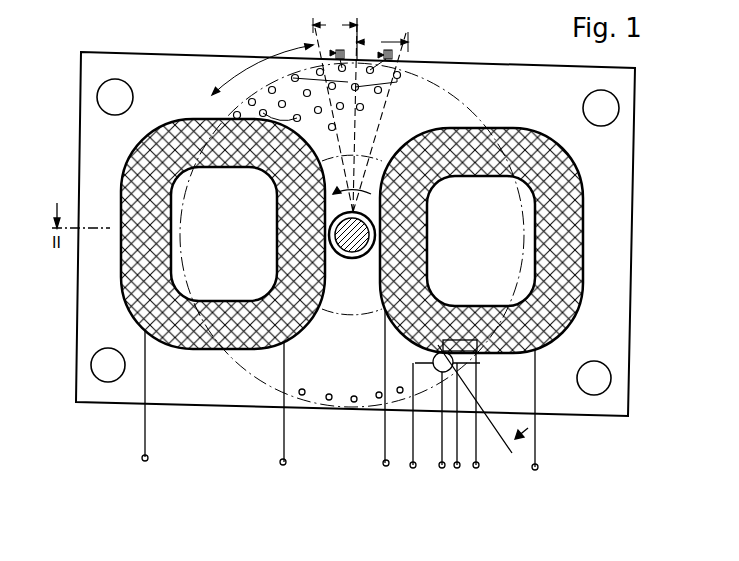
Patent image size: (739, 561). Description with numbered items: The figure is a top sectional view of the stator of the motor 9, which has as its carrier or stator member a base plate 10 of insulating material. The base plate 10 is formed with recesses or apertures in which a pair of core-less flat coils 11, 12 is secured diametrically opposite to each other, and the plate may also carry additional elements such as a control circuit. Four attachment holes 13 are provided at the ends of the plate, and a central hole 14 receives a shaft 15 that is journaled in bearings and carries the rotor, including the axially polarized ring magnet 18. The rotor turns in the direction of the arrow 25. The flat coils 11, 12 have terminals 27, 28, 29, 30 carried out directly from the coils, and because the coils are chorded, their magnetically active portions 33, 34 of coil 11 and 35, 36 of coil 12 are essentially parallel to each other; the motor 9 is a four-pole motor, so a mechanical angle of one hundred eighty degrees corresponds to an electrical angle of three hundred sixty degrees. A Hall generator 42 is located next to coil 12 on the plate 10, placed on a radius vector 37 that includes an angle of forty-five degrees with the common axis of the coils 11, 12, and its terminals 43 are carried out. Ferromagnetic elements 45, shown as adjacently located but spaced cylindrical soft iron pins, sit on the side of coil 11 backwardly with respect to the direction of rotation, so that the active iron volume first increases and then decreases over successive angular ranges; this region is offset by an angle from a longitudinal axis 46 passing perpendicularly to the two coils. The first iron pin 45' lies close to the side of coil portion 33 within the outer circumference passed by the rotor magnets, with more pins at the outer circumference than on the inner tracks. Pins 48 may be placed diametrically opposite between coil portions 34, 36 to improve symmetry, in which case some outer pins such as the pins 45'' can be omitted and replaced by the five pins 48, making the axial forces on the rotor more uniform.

The motor 9 is at (172, 43).
The base plate 10 is at (507, 72).
The flat coil 11 is at (128, 277).
The flat coil 12 is at (580, 304).
The attachment holes 13 is at (115, 88).
The central hole 14 is at (358, 258).
The shaft 15 is at (346, 252).
The ring magnet 18 is at (272, 387).
The arrow indicating direction of rotation 25 is at (360, 117).
The coil terminal 27 is at (142, 458).
The coil terminal 28 is at (293, 406).
The coil terminal 29 is at (383, 463).
The coil terminal 30 is at (538, 467).
The magnetically active coil portion 33 is at (224, 135).
The magnetically active coil portion 34 is at (224, 312).
The magnetically active coil portion 35 is at (486, 158).
The magnetically active coil portion 36 is at (489, 312).
The radius vector 37 is at (468, 389).
The Hall generator 42 is at (433, 358).
The Hall generator terminals 43 is at (476, 468).
The ferromagnetic elements 45 is at (317, 120).
The first iron pin 45' is at (212, 109).
The outer circumference pins 45'' is at (411, 93).
The longitudinal axis 46 is at (359, 27).
The pins 48 is at (398, 388).